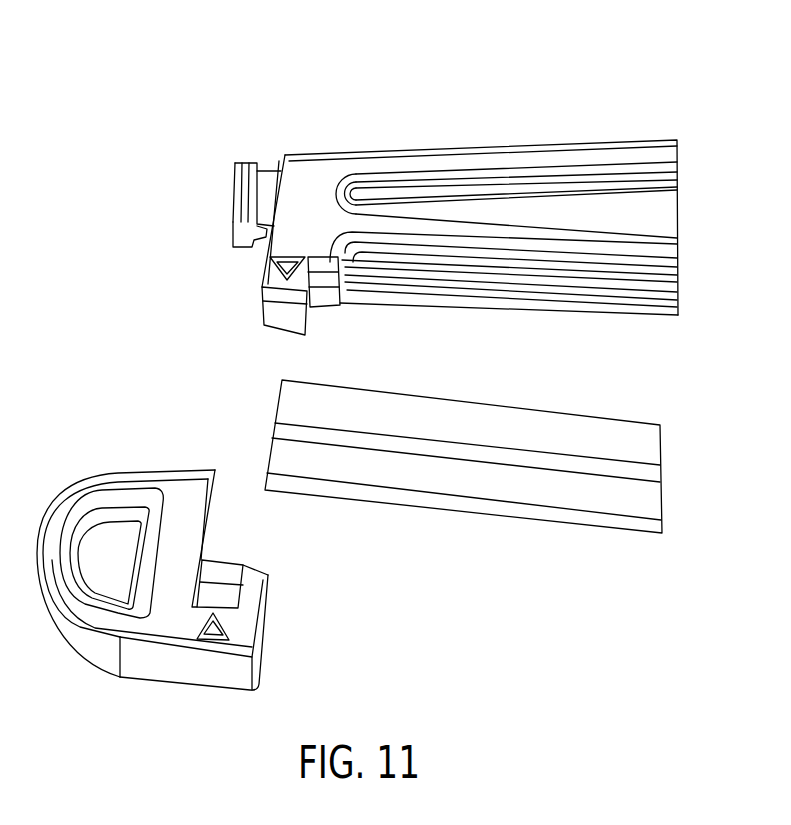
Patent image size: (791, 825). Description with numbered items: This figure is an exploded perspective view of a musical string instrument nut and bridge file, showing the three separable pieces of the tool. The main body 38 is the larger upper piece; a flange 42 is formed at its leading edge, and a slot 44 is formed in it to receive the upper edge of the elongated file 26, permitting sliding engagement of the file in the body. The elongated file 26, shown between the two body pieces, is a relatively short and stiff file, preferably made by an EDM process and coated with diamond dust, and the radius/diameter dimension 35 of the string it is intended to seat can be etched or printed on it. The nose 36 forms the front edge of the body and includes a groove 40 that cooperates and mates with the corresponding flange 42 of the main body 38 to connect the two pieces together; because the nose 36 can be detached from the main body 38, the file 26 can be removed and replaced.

The main body 38 is at (439, 230).
The flange 42 is at (237, 267).
The slot 44 is at (571, 298).
The radius/diameter dimension 35 is at (463, 454).
The elongated file 26 is at (514, 490).
The groove 40 is at (163, 600).
The nose 36 is at (127, 633).